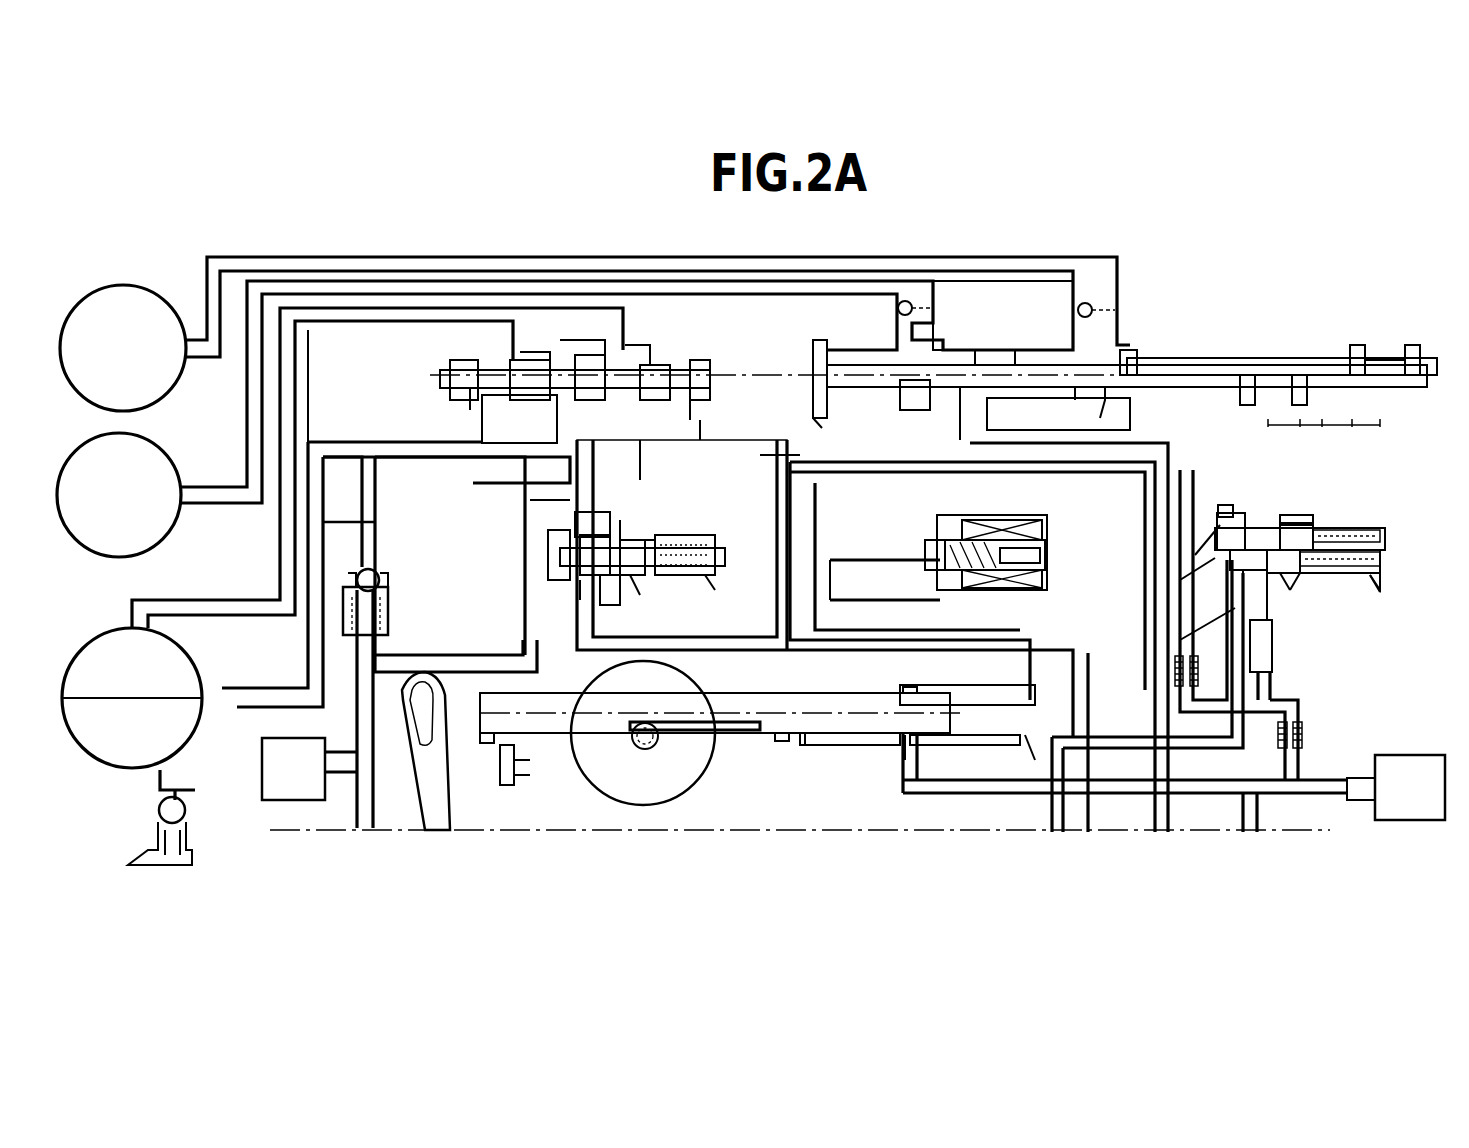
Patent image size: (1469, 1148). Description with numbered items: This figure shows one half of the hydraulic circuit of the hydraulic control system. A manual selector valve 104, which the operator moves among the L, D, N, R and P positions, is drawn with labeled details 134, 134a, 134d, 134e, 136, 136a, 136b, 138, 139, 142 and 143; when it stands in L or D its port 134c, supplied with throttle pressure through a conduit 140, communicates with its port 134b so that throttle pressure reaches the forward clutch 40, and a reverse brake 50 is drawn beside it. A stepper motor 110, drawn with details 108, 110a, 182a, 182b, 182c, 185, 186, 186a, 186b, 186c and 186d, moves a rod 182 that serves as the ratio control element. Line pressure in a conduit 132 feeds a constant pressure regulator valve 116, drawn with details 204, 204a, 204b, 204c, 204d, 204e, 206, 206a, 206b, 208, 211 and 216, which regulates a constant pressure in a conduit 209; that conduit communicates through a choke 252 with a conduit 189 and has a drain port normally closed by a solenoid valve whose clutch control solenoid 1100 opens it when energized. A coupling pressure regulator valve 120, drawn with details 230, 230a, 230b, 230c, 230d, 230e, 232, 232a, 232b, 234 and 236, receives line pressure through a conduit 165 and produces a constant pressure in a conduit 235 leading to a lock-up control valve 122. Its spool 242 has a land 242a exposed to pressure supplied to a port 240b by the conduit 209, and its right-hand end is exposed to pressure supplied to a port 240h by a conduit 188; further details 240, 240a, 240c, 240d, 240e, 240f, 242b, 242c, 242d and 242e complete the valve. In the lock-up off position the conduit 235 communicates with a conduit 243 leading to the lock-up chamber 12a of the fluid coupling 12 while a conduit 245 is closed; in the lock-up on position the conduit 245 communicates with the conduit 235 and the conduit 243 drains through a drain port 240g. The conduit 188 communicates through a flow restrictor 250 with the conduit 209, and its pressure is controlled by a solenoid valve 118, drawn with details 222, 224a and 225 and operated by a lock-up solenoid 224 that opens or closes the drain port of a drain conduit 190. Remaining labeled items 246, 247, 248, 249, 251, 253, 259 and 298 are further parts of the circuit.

The reverse brake 50 is at (170, 310).
The forward clutch 40 is at (178, 452).
The fluid coupling 12 is at (100, 752).
The lock-up chamber 12a is at (195, 665).
The manual selector valve 104 is at (1148, 308).
The oil pump housing 108 is at (860, 738).
The stepper motor 110 is at (568, 795).
The pump shaft 110a is at (652, 748).
The constant pressure regulator valve 116 is at (1300, 590).
The solenoid valve 118 is at (918, 532).
The coupling pressure regulator valve 120 is at (695, 598).
The lock-up control valve 122 is at (395, 370).
The hydraulic fluid conduit 132 is at (1050, 812).
The manual valve spool 134 is at (1178, 355).
The spool land 134a is at (828, 415).
The port 134b is at (905, 400).
The port 134c is at (960, 455).
The spool land 134d is at (1075, 405).
The spool land 134e is at (1105, 405).
The shift lever 136 is at (1293, 358).
The lever land 136a is at (995, 360).
The lever land 136b is at (1130, 358).
The detent 138 is at (1035, 273).
The detent ball 139 is at (1090, 303).
The hydraulic fluid conduit 140 is at (1155, 608).
The line pressure passage 142 is at (778, 290).
The detent ball 143 is at (928, 315).
The hydraulic fluid conduit 165 is at (910, 655).
The rod 182 is at (542, 725).
The shaft portion 182a is at (770, 725).
The shaft portion 182b is at (950, 725).
The shaft portion 182c is at (726, 735).
The lever 185 is at (428, 730).
The pump housing 186 is at (975, 695).
The housing portion 186a is at (785, 745).
The housing portion 186b is at (820, 750).
The housing portion 186c is at (908, 760).
The housing portion 186d is at (1028, 745).
The hydraulic fluid conduit 188 is at (792, 518).
The hydraulic fluid conduit 189 is at (938, 790).
The drain hydraulic conduit 190 is at (826, 603).
The pressure regulator valve 204 is at (1345, 525).
The valve land 204a is at (1215, 570).
The valve land 204b is at (1238, 600).
The valve plunger 204c is at (1262, 620).
The valve land 204d is at (1300, 600).
The valve land 204e is at (1380, 592).
The valve spool 206 is at (1380, 530).
The spool land 206a is at (1250, 530).
The spool land 206b is at (1295, 530).
The spring 208 is at (1380, 555).
The hydraulic fluid conduit 209 is at (1130, 480).
The plunger 211 is at (1270, 662).
The passage 216 is at (1195, 530).
The solenoid plunger 222 is at (948, 575).
The lock-up solenoid 224 is at (1020, 530).
The coil core 224a is at (960, 545).
The solenoid spring 225 is at (1040, 552).
The valve spool 230 is at (705, 535).
The spool land 230a is at (560, 578).
The spool land 230b is at (583, 585).
The spool land 230c is at (606, 595).
The spool land 230d is at (635, 575).
The spool land 230e is at (705, 585).
The valve plug 232 is at (548, 560).
The plug land 232a is at (570, 540).
The plug land 232b is at (630, 545).
The spring 234 is at (712, 553).
The hydraulic fluid conduit 235 is at (595, 435).
The chamber 236 is at (575, 525).
The shift valve 240 is at (690, 355).
The valve land 240a is at (462, 402).
The port 240b is at (470, 410).
The valve chamber 240c is at (519, 419).
The valve land 240d is at (505, 470).
The valve land 240e is at (585, 462).
The valve land 240f is at (700, 388).
The drain port 240g is at (720, 470).
The port 240h is at (700, 412).
The spool 242 is at (450, 386).
The land 242a is at (440, 352).
The spool land 242b is at (530, 358).
The spool land 242c is at (600, 360).
The spool land 242d is at (620, 352).
The spool land 242e is at (700, 362).
The hydraulic fluid conduit 243 is at (296, 358).
The hydraulic fluid conduit 245 is at (375, 522).
The passage 246 is at (465, 445).
The passage 247 is at (520, 290).
The passage 248 is at (650, 440).
The passage 249 is at (690, 430).
The choke or flow restrictor 250 is at (1172, 668).
The check valve 251 is at (185, 808).
The choke 252 is at (1302, 740).
The check valve 253 is at (380, 578).
The passage 259 is at (485, 668).
The strainer 298 is at (290, 738).
The clutch control solenoid 1100 is at (1410, 755).